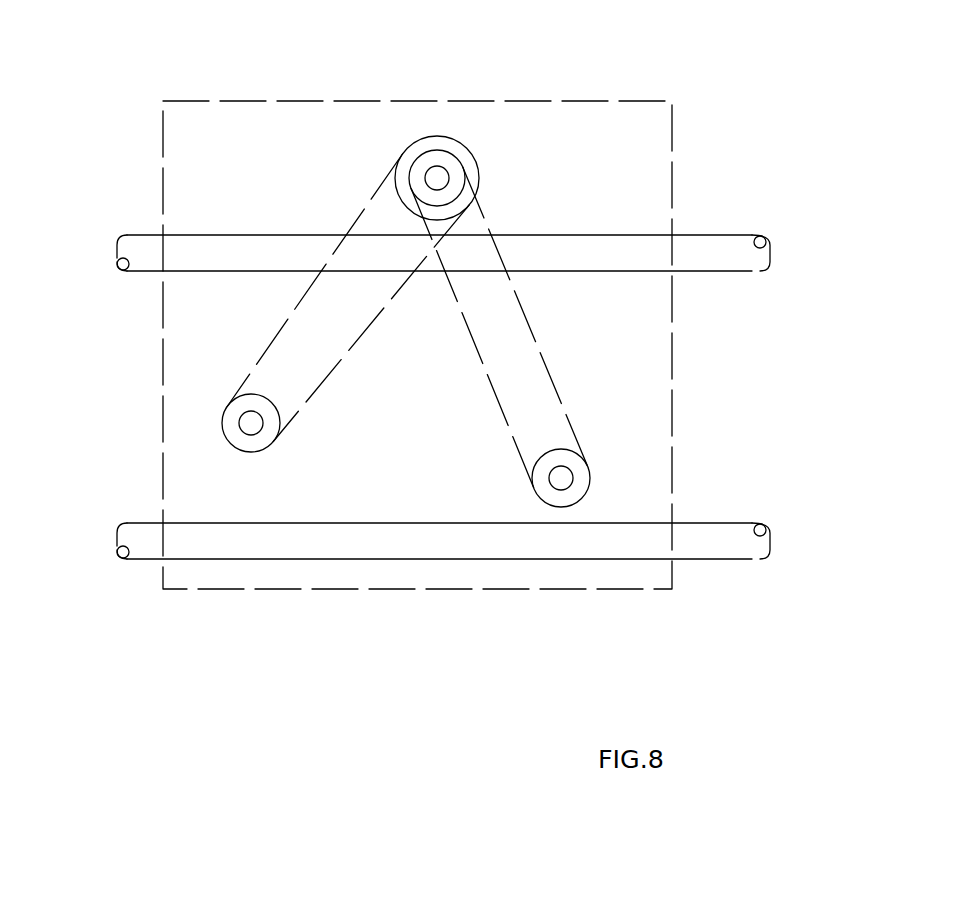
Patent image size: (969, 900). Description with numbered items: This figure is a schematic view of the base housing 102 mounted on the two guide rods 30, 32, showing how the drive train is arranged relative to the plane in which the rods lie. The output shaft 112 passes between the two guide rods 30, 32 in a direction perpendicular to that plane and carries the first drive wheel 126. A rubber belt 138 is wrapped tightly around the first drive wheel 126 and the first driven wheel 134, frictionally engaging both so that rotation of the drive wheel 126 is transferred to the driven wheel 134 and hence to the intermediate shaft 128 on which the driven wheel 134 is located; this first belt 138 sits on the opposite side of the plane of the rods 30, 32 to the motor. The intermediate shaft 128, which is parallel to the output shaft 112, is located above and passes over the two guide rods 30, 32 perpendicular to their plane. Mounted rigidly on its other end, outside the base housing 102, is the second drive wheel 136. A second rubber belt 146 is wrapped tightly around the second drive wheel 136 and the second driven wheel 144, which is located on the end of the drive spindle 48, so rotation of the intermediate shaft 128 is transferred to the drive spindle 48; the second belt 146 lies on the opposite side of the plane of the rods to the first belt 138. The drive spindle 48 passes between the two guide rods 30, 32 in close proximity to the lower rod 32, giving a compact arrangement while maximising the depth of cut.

The base housing 102 is at (237, 100).
The guide rod 30 is at (187, 247).
The guide rod 32 is at (323, 547).
The intermediate shaft 128 is at (435, 176).
The second drive wheel 136 is at (440, 158).
The first driven wheel 134 is at (467, 158).
The rubber belt 138 is at (283, 325).
The second rubber belt 146 is at (537, 340).
The output shaft 112 is at (247, 421).
The first drive wheel 126 is at (236, 433).
The second driven wheel 144 is at (572, 462).
The drive spindle 48 is at (566, 479).